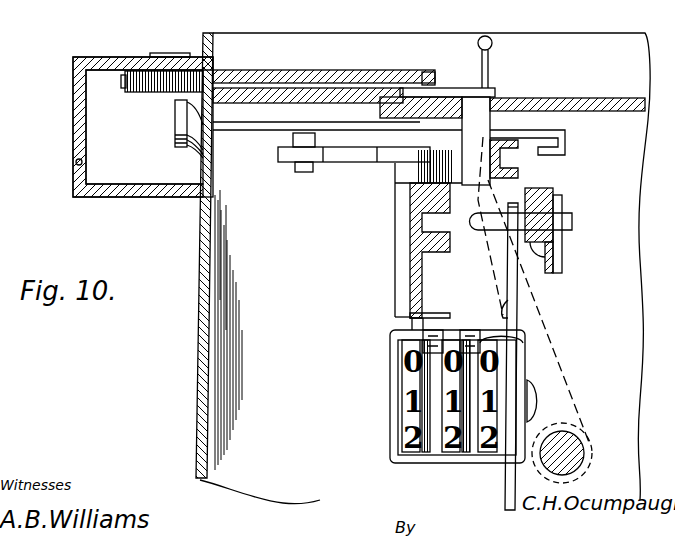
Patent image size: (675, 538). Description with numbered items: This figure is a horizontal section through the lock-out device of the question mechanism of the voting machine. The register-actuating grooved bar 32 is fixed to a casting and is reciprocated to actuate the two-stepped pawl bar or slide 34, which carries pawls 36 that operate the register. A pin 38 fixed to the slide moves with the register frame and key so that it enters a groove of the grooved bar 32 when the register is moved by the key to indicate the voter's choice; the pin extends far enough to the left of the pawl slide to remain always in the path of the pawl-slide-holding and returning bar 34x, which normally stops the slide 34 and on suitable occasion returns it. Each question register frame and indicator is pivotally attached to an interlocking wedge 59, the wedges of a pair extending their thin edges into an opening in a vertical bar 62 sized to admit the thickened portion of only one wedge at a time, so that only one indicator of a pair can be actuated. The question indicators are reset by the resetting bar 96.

The question-indicators-resetting bar 96 is at (354, 109).
The vertical bar 62 is at (298, 172).
The interlocking wedge 59 is at (370, 163).
The register-actuating grooved bar 32 is at (423, 248).
The pin 38 is at (572, 223).
The pawl-slide-holding and returning bar 34x is at (560, 252).
The two-stepped pawl bar or slide 34 is at (517, 298).
The pawls 36 is at (507, 307).